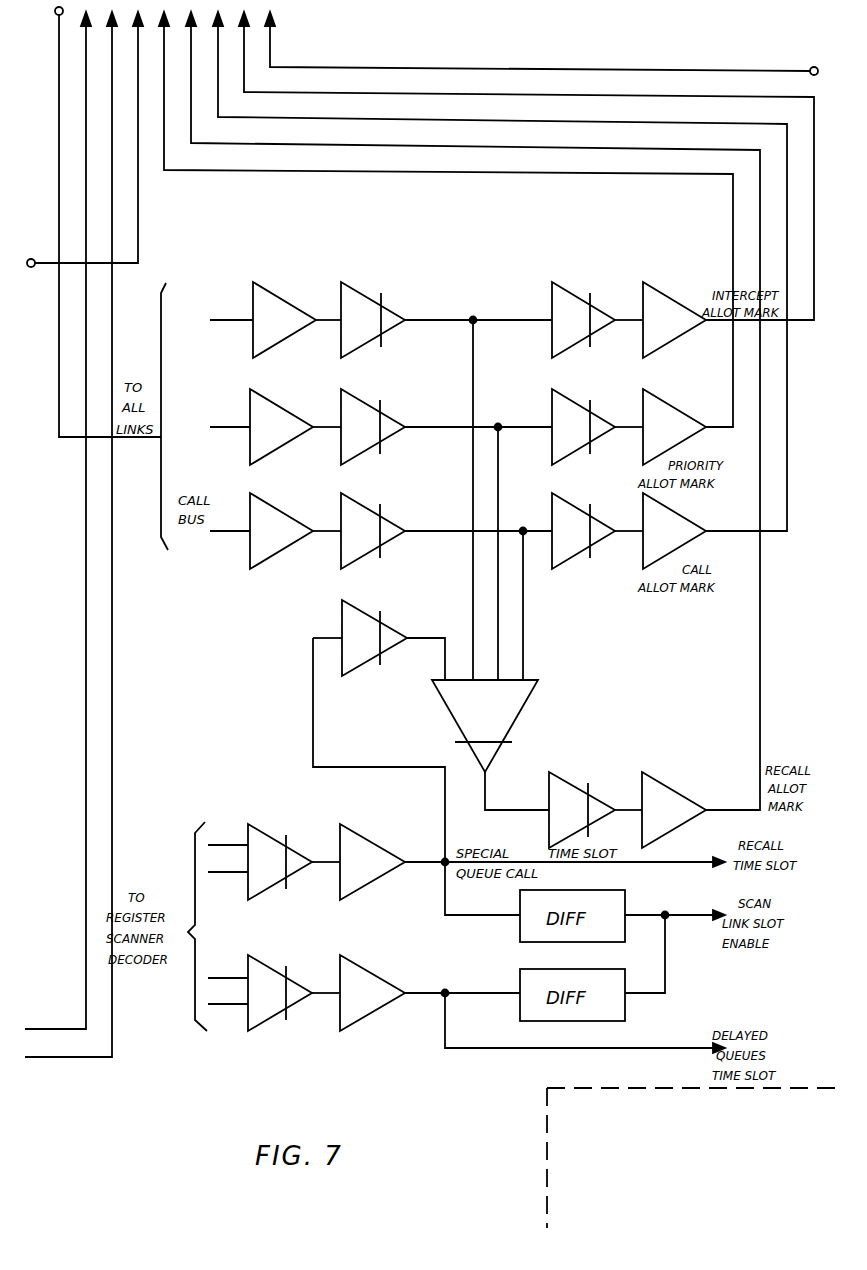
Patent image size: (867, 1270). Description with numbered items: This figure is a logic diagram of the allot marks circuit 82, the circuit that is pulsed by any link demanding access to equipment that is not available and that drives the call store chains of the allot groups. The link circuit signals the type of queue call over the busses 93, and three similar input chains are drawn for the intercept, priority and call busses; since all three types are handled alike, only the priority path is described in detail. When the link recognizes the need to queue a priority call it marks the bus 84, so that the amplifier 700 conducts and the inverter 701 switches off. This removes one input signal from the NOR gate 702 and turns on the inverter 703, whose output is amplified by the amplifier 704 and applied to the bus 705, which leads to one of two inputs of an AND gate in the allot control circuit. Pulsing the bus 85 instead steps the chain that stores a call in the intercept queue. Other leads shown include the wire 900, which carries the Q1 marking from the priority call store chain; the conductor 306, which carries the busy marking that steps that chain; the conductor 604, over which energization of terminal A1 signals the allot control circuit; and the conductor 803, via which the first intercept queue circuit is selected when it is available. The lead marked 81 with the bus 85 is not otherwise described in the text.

The busses 93 is at (94, 222).
The wire 900 is at (58, 520).
The conductor 306 is at (71, 534).
The conductor 604 is at (76, 154).
The intercept allot mark lead 81 is at (525, 166).
The bus 85 is at (216, 328).
The conductor 803 is at (540, 43).
The bus 84 is at (216, 432).
The amplifier 700 is at (310, 402).
The inverter 701 is at (358, 391).
The NOR gate 702 is at (538, 686).
The inverter 703 is at (578, 402).
The amplifier 704 is at (694, 400).
The bus 705 is at (766, 376).
The allot marks circuit 82 is at (636, 1162).